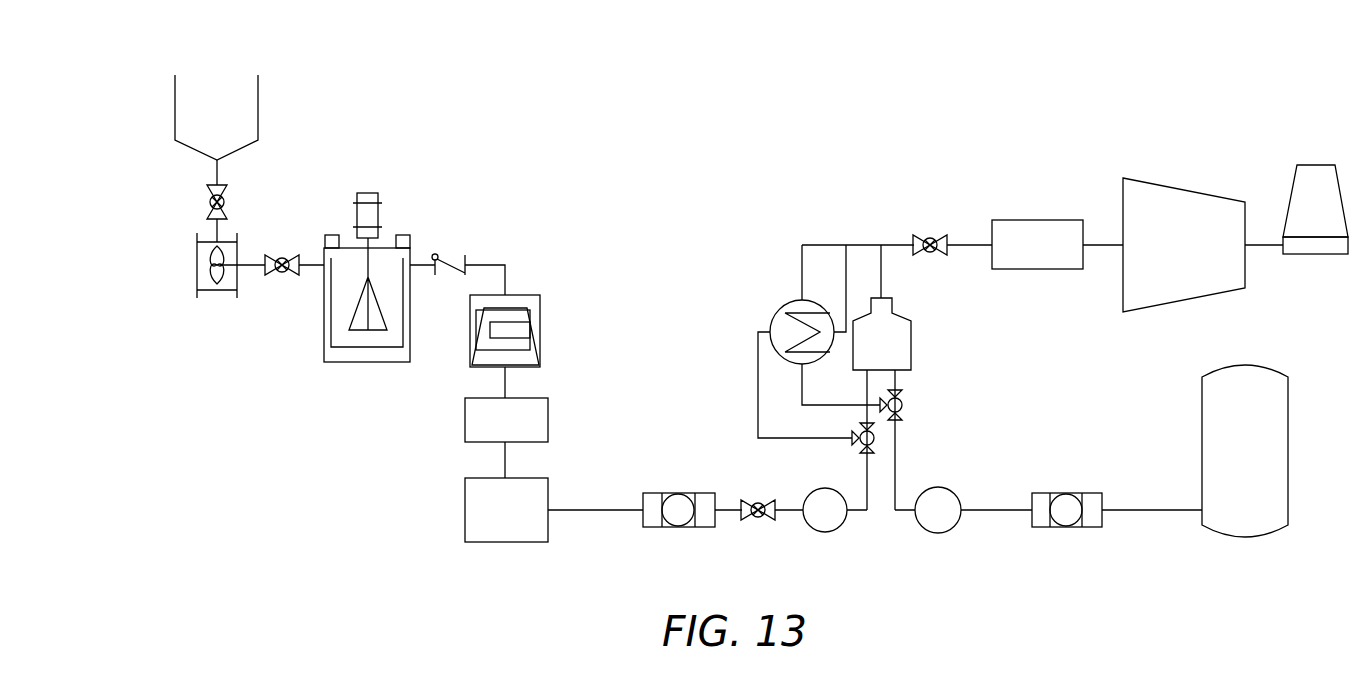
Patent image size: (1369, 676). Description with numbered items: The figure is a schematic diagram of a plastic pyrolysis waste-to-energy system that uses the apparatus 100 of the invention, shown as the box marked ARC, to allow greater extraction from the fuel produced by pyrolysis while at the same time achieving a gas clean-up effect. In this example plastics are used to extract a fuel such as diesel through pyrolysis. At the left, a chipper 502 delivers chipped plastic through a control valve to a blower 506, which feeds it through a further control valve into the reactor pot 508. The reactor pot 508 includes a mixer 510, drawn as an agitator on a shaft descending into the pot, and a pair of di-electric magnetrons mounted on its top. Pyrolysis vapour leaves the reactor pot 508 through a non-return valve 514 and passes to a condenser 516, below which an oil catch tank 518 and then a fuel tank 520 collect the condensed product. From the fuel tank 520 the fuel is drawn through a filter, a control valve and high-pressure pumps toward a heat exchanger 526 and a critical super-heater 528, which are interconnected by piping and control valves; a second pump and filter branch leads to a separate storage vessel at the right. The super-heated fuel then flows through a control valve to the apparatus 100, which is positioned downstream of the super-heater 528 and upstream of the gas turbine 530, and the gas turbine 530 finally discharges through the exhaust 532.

The apparatus 100 is at (1038, 219).
The chipper 502 is at (259, 90).
The blower 506 is at (196, 266).
The reactor pot 508 is at (366, 363).
The mixer 510 is at (368, 192).
The non-return valve 514 is at (452, 256).
The condenser 516 is at (542, 331).
The oil catch tank 518 is at (549, 421).
The fuel tank 520 is at (464, 511).
The heat exchanger 526 is at (777, 306).
The critical super-heater 528 is at (913, 335).
The gas turbine 530 is at (1185, 186).
The exhaust 532 is at (1318, 163).